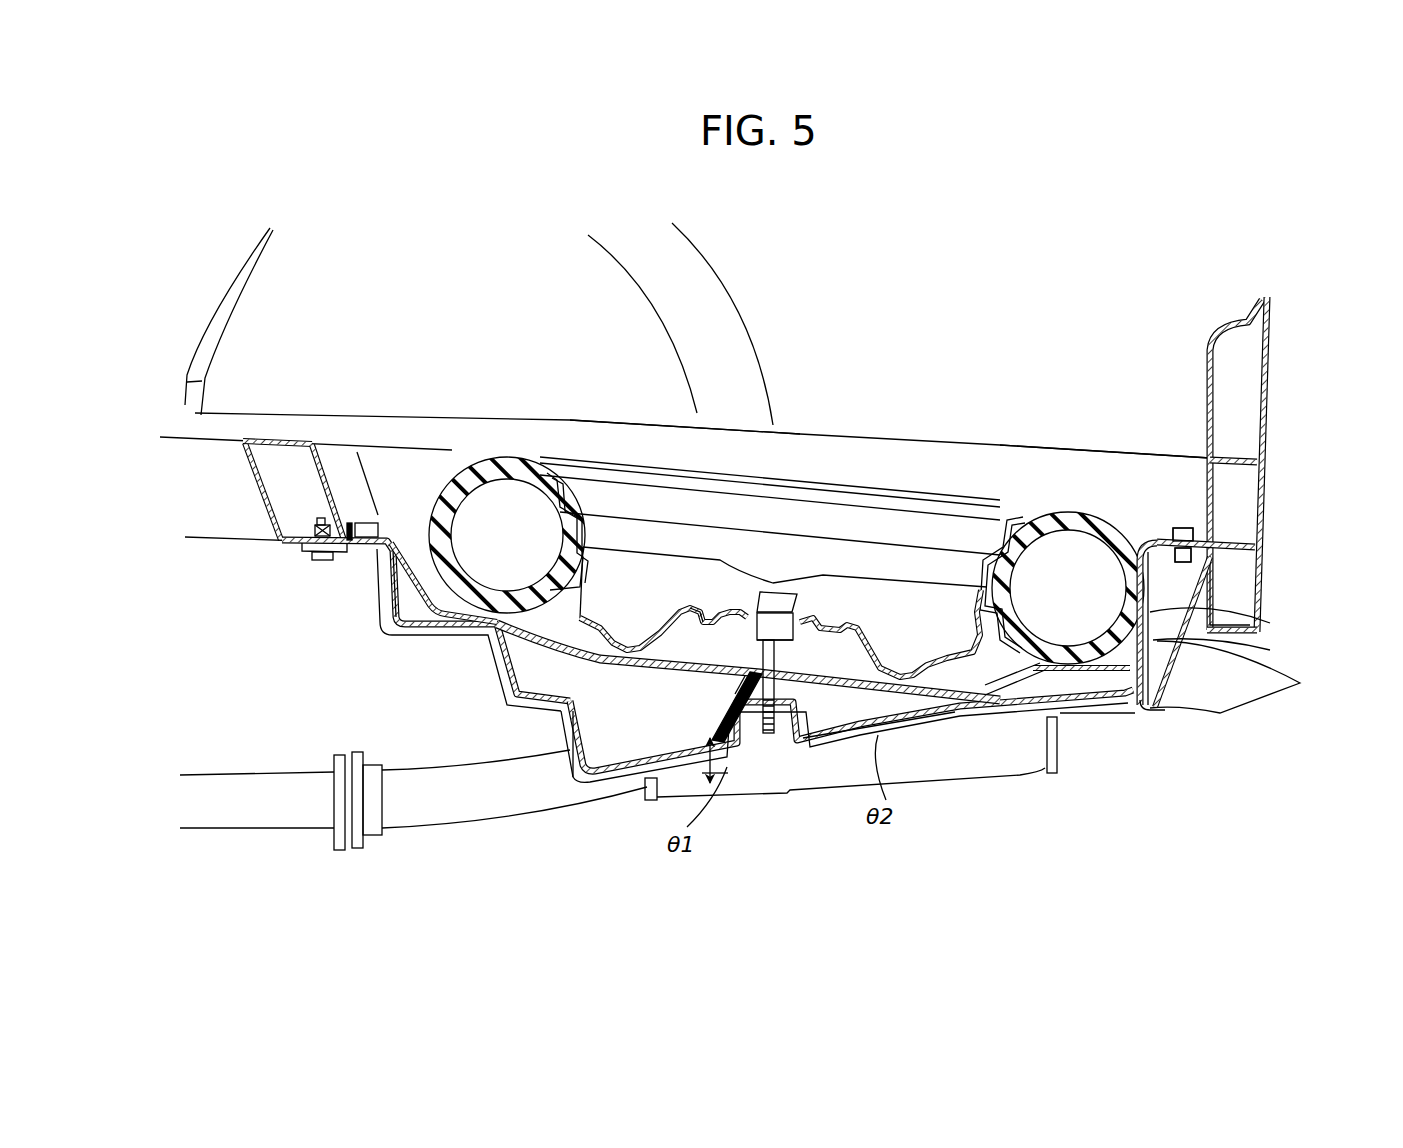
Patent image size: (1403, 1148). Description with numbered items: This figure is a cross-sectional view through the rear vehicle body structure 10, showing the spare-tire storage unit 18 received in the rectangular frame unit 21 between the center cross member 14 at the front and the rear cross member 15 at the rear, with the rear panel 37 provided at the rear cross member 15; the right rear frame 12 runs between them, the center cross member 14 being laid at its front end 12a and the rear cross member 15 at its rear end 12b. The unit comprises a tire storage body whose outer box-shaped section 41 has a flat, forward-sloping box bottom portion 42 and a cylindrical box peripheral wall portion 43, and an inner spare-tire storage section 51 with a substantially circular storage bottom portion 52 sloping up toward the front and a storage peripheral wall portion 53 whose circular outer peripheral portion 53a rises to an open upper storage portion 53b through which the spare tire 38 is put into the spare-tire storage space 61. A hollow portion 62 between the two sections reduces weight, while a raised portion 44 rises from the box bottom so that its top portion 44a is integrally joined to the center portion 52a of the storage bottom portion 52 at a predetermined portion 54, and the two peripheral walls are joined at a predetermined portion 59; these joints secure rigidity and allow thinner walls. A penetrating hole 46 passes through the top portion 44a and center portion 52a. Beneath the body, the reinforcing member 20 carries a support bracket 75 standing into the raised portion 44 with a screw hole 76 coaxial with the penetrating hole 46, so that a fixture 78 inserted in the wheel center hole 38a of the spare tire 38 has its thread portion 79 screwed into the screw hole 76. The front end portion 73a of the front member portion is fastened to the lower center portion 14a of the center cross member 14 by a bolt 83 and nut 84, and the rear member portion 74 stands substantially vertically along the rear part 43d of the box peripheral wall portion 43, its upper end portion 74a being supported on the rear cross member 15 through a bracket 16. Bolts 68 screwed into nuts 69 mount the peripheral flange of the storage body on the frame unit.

The rear vehicle body structure 10 is at (801, 253).
The right rear frame 12 is at (685, 391).
The front end of right rear frame 12a is at (352, 425).
The rear end of right rear frame 12b is at (1188, 455).
The center cross member 14 is at (293, 439).
The lower center portion of center cross member 14a is at (328, 492).
The rear cross member 15 is at (1262, 558).
The bracket 16 is at (1190, 665).
The spare-tire storage unit 18 is at (638, 809).
The reinforcing member 20 is at (949, 740).
The rectangular frame unit 21 is at (803, 450).
The rear panel 37 is at (1272, 445).
The spare tire 38 is at (831, 542).
The wheel center hole 38a is at (750, 590).
The box-shaped section 41 is at (1193, 680).
The box bottom portion 42 is at (1090, 710).
The box peripheral wall portion 43 is at (1233, 642).
The rear part of box peripheral wall portion 43d is at (1243, 620).
The raised portion 44 is at (803, 764).
The top portion of raised portion 44a is at (855, 725).
The penetrating hole 46 is at (745, 648).
The spare-tire storage section 51 is at (737, 642).
The storage bottom portion 52 is at (734, 773).
The center portion of storage bottom portion 52a is at (780, 624).
The storage peripheral wall portion 53 is at (737, 566).
The outer peripheral portion of storage peripheral wall portion 53a is at (418, 563).
The open upper storage portion 53b is at (411, 522).
The predetermined portion 54 is at (760, 667).
The predetermined portion 59 is at (498, 593).
The spare-tire storage space 61 is at (1057, 757).
The hollow portion 62 is at (603, 742).
The bolt 68 is at (377, 517).
The nut 69 is at (1187, 566).
The front end portion of front member portion 73a is at (266, 558).
The rear member portion 74 is at (1229, 667).
The upper end portion of rear member portion 74a is at (1195, 643).
The support bracket 75 is at (727, 720).
The screw hole 76 is at (776, 683).
The fixture 78 is at (790, 590).
The thread portion 79 is at (776, 735).
The bolt 83 is at (320, 558).
The nut 84 is at (313, 526).